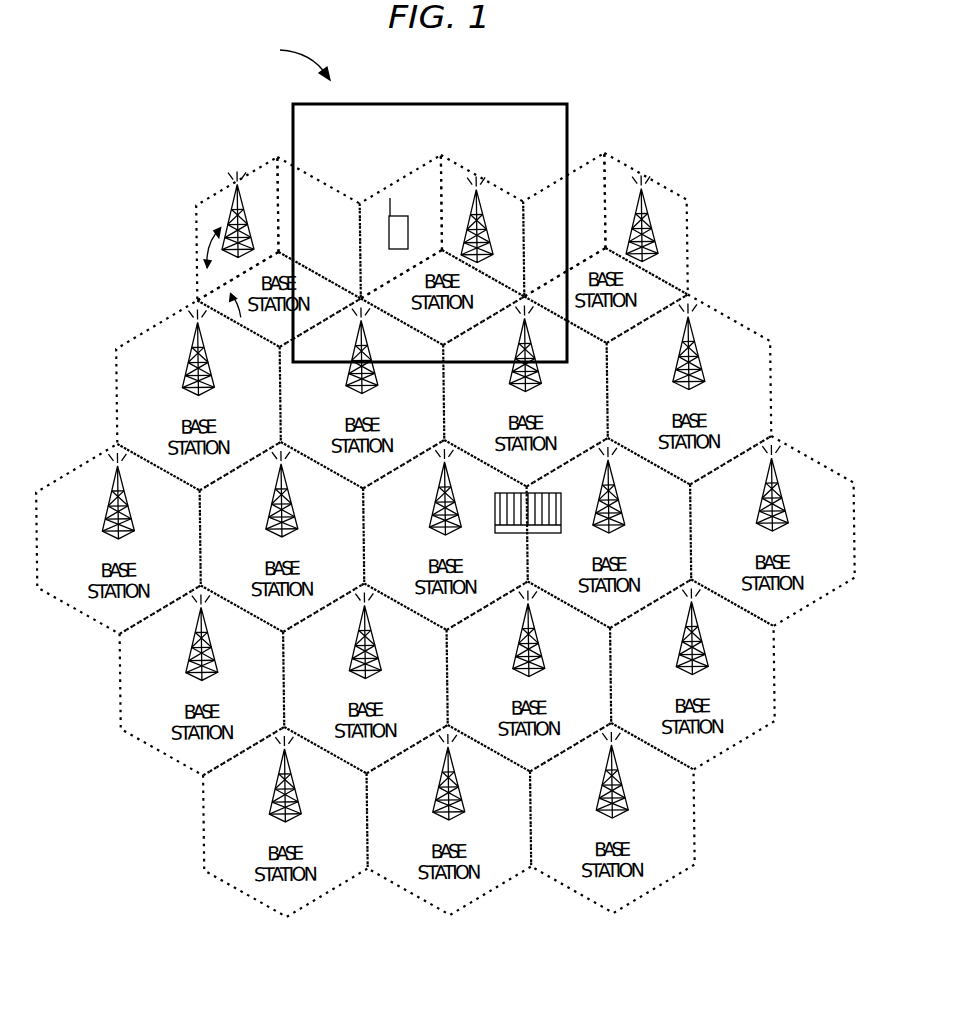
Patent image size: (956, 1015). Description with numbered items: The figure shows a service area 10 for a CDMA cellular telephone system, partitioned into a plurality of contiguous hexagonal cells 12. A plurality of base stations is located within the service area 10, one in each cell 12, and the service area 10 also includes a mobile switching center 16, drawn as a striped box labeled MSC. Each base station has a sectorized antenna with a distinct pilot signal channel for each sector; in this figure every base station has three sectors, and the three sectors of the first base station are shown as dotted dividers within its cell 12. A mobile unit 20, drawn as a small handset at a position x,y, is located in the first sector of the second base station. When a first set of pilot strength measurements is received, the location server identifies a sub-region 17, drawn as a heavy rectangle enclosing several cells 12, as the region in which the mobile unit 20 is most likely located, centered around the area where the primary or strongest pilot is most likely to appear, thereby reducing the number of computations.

The service area 10 is at (292, 59).
The hexagonal cell 12 is at (727, 318).
The mobile switching center (MSC) 16 is at (515, 537).
The sub-region 17 is at (514, 103).
The mobile unit 20 is at (406, 250).